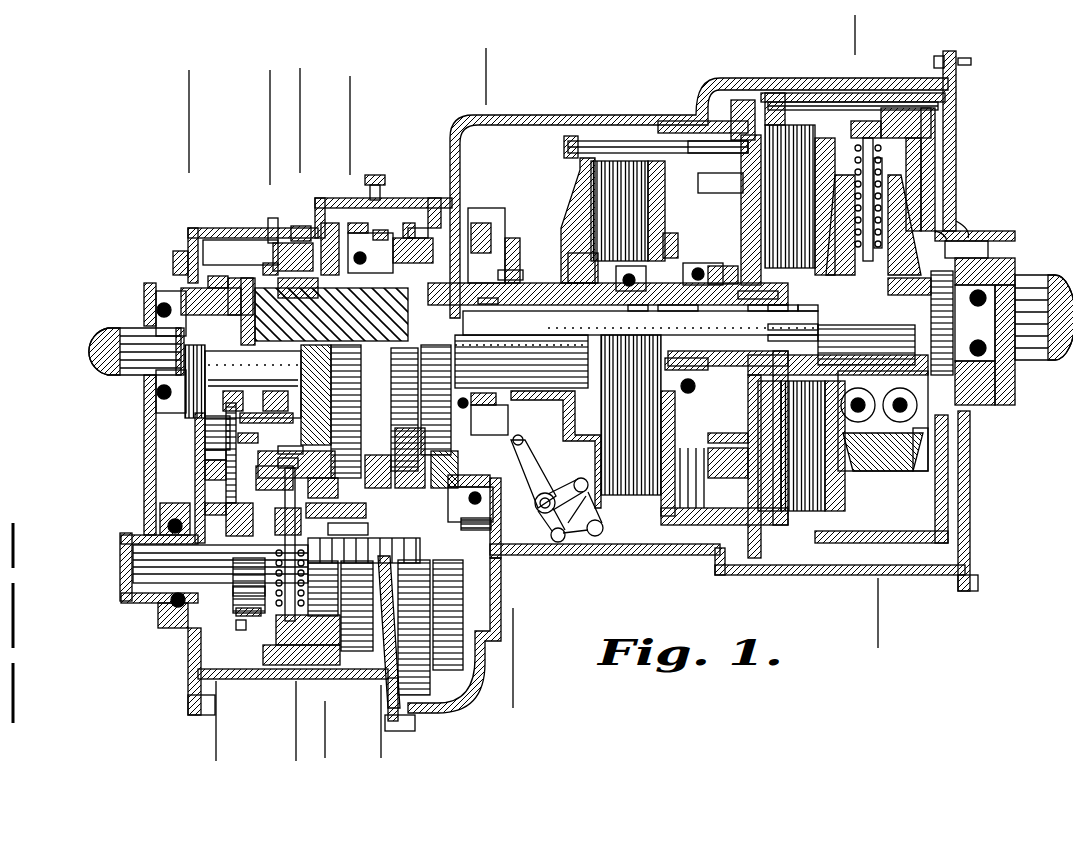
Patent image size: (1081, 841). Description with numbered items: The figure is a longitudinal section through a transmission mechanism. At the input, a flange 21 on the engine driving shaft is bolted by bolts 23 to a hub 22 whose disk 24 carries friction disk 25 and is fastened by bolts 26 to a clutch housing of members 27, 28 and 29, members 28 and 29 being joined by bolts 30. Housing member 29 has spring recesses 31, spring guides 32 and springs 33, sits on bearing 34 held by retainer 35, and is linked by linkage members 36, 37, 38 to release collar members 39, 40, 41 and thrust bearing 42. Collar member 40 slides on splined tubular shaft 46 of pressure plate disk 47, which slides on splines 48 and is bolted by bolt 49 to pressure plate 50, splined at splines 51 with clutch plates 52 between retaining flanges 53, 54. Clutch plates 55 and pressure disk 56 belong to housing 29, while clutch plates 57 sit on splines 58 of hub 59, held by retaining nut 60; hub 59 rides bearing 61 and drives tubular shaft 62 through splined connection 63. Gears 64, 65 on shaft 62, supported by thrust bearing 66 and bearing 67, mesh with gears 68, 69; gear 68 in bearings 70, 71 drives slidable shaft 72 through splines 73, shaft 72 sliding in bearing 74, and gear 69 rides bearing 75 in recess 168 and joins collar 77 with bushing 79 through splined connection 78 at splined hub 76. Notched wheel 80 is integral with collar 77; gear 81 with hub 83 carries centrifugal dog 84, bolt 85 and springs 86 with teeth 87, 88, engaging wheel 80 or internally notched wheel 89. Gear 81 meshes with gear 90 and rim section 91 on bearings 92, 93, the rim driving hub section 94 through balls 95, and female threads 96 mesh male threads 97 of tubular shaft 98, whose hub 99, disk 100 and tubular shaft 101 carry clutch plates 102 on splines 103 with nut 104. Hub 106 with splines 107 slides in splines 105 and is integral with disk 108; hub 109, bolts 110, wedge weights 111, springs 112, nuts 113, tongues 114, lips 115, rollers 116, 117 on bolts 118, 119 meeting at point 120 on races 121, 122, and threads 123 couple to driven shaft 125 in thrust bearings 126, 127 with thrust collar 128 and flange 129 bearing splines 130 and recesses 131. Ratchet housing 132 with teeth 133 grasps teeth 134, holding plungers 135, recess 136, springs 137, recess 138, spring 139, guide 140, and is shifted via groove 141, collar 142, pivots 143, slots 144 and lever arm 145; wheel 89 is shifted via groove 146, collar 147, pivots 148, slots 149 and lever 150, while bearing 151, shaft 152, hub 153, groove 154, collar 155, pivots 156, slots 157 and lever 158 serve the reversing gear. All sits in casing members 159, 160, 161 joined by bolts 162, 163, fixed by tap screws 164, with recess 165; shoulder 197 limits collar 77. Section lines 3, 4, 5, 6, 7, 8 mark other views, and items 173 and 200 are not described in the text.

The section line 3- 3 is at (861, 620).
The section line 4- 4 is at (496, 680).
The section line 5- 5 is at (364, 733).
The section line 6- 6 is at (198, 717).
The section line 7- 7 is at (308, 718).
The section line 8- 8 is at (279, 732).
The flange 21 is at (1015, 275).
The hub 22 is at (1005, 255).
The bolts 23 is at (966, 249).
The disk 24 is at (975, 228).
The friction disk 25 is at (958, 215).
The bolts 26 is at (925, 72).
The housing member 27 is at (950, 115).
The housing member 28 is at (785, 85).
The housing member 29 is at (695, 106).
The bolts 30 is at (745, 74).
The spring-containing recesses 31 is at (700, 542).
The spring guides 32 is at (715, 462).
The springs 33 is at (720, 434).
The bearing 34 is at (697, 270).
The retainer 35 is at (690, 376).
The linkage member 36 is at (568, 530).
The linkage member 37 is at (560, 506).
The linkage member 38 is at (540, 466).
The clutch release collar member 39 is at (506, 243).
The clutch release collar member 40 is at (506, 262).
The clutch release mechanism member 41 is at (482, 216).
The thrust bearing 42 is at (492, 228).
The splined tubular shaft 46 is at (536, 396).
The pressure plate disk 47 is at (570, 190).
The splines 48 is at (586, 135).
The bolt 49 is at (692, 146).
The pressure plate 50 is at (740, 403).
The splines 51 is at (777, 109).
The clutch plates 52 is at (822, 146).
The retaining flange 53 is at (710, 72).
The retaining flange 54 is at (842, 120).
The clutch plates 55 is at (624, 141).
The pressure disk 56 is at (655, 176).
The clutch plates 57 is at (656, 210).
The splines 58 is at (662, 230).
The hub 59 is at (583, 265).
The retaining nut 60 is at (632, 272).
The bearing 61 is at (678, 314).
The tubular shaft 62 is at (640, 322).
The splined connection 63 is at (638, 314).
The gear 64 is at (426, 196).
The gear 65 is at (405, 220).
The thrust bearing 66 is at (450, 296).
The bearing 67 is at (490, 296).
The gear 68 is at (455, 480).
The gear 69 is at (426, 458).
The bearing 70 is at (527, 493).
The bearing 71 is at (398, 552).
The slidable shaft 72 is at (160, 545).
The splines 73 is at (528, 521).
The bearing 74 is at (159, 518).
The bearing 75 is at (376, 416).
The splined hub 76 is at (350, 556).
The collar 77 is at (335, 552).
The splined connection 78 is at (374, 551).
The bushing 79 is at (317, 552).
The notched wheel 80 is at (324, 583).
The gear 81 is at (345, 641).
The hub 83 is at (318, 672).
The centrifugally operative dog 84 is at (281, 492).
The bolt 85 is at (268, 546).
The springs 86 is at (246, 556).
The tooth 87 is at (300, 500).
The tooth 88 is at (306, 488).
The internally notched wheel 89 is at (300, 452).
The gear 90 is at (324, 196).
The rim section 91 is at (350, 222).
The bearing 92 is at (370, 253).
The bearing 93 is at (396, 240).
The hub section 94 is at (411, 237).
The balls 95 is at (372, 229).
The female screw threads 96 is at (112, 570).
The male screw threads 97 is at (410, 312).
The tubular shaft 98 is at (492, 312).
The hub 99 is at (745, 289).
The disk 100 is at (847, 155).
The tubular shaft 101 is at (781, 313).
The clutch plates 102 is at (740, 226).
The splines 103 is at (765, 314).
The retaining nut 104 is at (726, 268).
The splines 105 is at (804, 313).
The hub 106 is at (780, 320).
The splines 107 is at (780, 332).
The disk 108 is at (900, 115).
The hub 109 is at (914, 278).
The bolts 110 is at (875, 161).
The wedge-shaped weights 111 is at (892, 190).
The springs 112 is at (874, 141).
The nuts 113 is at (857, 112).
The tongues 114 is at (927, 165).
The lips 115 is at (922, 178).
The rollers 116 is at (891, 392).
The rollers 117 is at (850, 392).
The bolt 118 is at (890, 418).
The bolt 119 is at (849, 418).
The point 120 is at (1012, 345).
The race 121 is at (850, 465).
The race 122 is at (902, 468).
The female screw threads 123 is at (866, 350).
The driven shaft 125 is at (132, 351).
The thrust bearing 126 is at (1000, 287).
The thrust bearing 127 is at (148, 302).
The thrust collar 128 is at (170, 322).
The flange 129 is at (258, 262).
The splines 130 is at (242, 430).
The recesses 131 is at (282, 291).
The ratchet clutch-carrying housing 132 is at (226, 256).
The ratchet teeth 133 is at (286, 223).
The ratchet teeth 134 is at (310, 202).
The plungers 135 is at (263, 247).
The recess 136 is at (252, 222).
The springs 137 is at (267, 210).
The recess 138 is at (186, 420).
The spring 139 is at (253, 384).
The guide 140 is at (253, 369).
The groove 141 is at (190, 362).
The shifting collar 142 is at (196, 307).
The pivots 143 is at (214, 274).
The slots 144 is at (222, 287).
The shifting lever arm 145 is at (165, 280).
The groove 146 is at (226, 585).
The shifting collar 147 is at (228, 603).
The pivots 148 is at (266, 628).
The slots 149 is at (230, 618).
The shifting lever 150 is at (264, 652).
The bearing 151 is at (197, 455).
The shaft 152 is at (197, 430).
The hub 153 is at (280, 456).
The groove 154 is at (285, 440).
The shifting collar 155 is at (197, 475).
The pivots 156 is at (232, 520).
The slots 157 is at (218, 480).
The shifting lever 158 is at (222, 504).
The casing member 159 is at (545, 110).
The casing member 160 is at (183, 222).
The casing member 161 is at (148, 386).
The bolts 162 is at (378, 176).
The bolts 163 is at (165, 252).
The tap screws 164 is at (930, 48).
The recess 165 is at (143, 440).
The recess 168 is at (328, 523).
The shaft 173 is at (212, 560).
The shoulder 197 is at (470, 530).
The block 200 is at (720, 180).